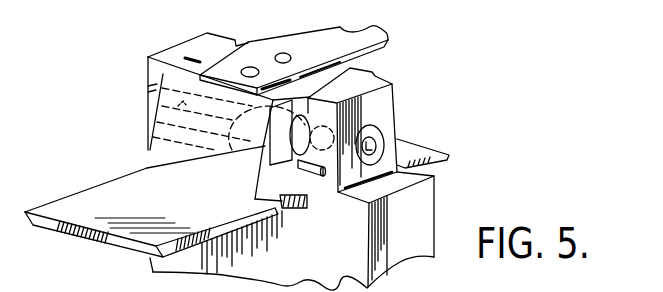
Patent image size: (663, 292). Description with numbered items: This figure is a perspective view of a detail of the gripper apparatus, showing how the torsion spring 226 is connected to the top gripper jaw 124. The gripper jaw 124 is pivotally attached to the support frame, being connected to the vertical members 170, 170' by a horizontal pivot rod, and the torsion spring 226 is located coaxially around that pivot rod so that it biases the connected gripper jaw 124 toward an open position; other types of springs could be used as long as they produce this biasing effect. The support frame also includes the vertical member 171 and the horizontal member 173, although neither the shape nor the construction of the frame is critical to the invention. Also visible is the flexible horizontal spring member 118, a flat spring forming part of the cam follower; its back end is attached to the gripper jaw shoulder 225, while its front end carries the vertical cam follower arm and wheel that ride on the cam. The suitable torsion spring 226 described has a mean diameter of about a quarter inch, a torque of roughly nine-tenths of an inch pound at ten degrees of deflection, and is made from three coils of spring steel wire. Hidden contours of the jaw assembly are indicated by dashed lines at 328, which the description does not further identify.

The vertical member 170' is at (184, 107).
The flexible horizontal spring member 118 is at (357, 36).
The vertical member 170 is at (403, 130).
The horizontal member 173 is at (421, 151).
The vertical member 171 is at (417, 218).
The hidden slot 328 is at (148, 110).
The top gripper jaw 124 is at (88, 200).
The torsion spring 226 is at (232, 124).
The gripper jaw shoulder 225 is at (268, 176).